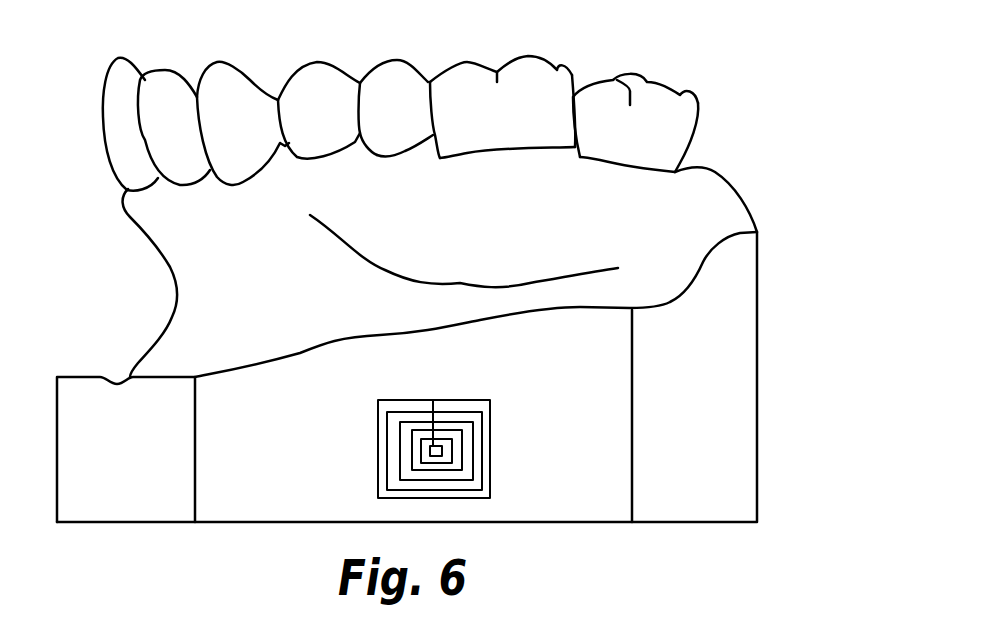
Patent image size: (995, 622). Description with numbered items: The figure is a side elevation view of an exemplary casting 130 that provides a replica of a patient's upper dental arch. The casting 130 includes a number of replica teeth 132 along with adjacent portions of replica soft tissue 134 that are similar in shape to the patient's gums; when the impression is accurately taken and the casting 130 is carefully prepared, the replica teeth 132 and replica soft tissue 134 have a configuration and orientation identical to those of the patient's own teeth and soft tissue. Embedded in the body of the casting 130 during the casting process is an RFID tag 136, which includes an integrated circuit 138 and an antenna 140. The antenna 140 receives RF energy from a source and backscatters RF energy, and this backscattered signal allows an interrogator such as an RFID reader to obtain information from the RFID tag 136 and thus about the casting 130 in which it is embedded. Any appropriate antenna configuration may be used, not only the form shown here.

The casting 130 is at (770, 290).
The replica teeth 132 is at (385, 83).
The replica soft tissue 134 is at (193, 262).
The RFID tag 136 is at (458, 378).
The integrated circuit 138 is at (427, 443).
The antenna 140 is at (486, 452).